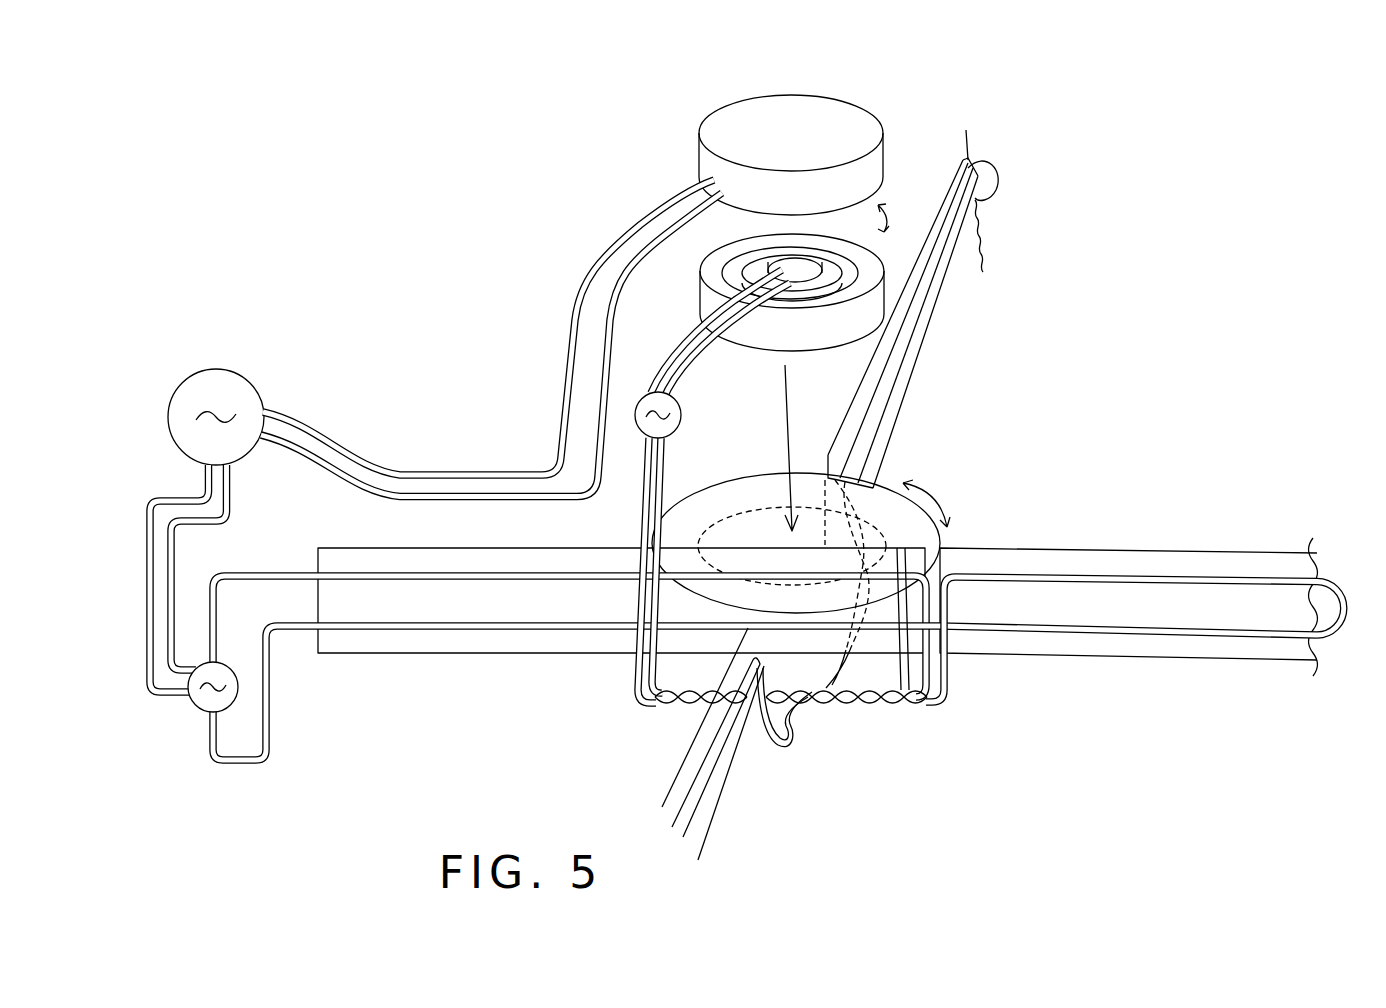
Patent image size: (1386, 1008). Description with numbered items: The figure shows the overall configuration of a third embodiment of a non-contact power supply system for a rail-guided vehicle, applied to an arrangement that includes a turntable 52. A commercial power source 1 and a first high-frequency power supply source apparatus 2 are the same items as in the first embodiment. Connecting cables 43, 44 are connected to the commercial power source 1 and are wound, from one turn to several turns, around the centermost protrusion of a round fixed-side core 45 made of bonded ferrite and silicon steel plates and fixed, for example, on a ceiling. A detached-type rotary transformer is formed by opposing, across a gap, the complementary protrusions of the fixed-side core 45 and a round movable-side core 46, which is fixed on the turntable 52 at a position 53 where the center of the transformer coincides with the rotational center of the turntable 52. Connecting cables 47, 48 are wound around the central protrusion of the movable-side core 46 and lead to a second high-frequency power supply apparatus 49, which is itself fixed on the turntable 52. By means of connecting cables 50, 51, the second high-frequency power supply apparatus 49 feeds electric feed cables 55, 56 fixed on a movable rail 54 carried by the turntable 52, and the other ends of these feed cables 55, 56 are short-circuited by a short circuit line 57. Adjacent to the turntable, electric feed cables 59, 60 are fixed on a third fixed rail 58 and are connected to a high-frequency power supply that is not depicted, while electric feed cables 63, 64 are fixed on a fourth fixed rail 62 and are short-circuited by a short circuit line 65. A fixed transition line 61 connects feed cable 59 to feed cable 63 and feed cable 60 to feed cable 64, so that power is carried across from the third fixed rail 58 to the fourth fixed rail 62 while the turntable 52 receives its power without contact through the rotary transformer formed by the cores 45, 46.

The commercial power source 1 is at (220, 368).
The first high-frequency power supply source apparatus 2 is at (197, 707).
The connecting cable 43 is at (432, 470).
The connecting cable 44 is at (433, 501).
The fixed-side core 45 is at (752, 97).
The movable-side core 46 is at (703, 265).
The connecting cable 47 is at (671, 333).
The connecting cable 48 is at (691, 357).
The second high-frequency power supply apparatus 49 is at (650, 395).
The connecting cable 50 is at (634, 498).
The connecting cable 51 is at (660, 476).
The turntable 52 is at (750, 474).
The position 53 is at (814, 506).
The movable rail 54 is at (700, 655).
The electric feed cable 55 is at (903, 690).
The electric feed cable 56 is at (863, 683).
The short circuit line 57 is at (944, 583).
The third fixed rail 58 is at (678, 768).
The electric feed cable 59 is at (731, 775).
The electric feed cable 60 is at (716, 810).
The transition line 61 is at (793, 742).
The fourth fixed rail 62 is at (948, 186).
The electric feed cable 63 is at (903, 362).
The electric feed cable 64 is at (955, 297).
The short circuit line 65 is at (1000, 198).